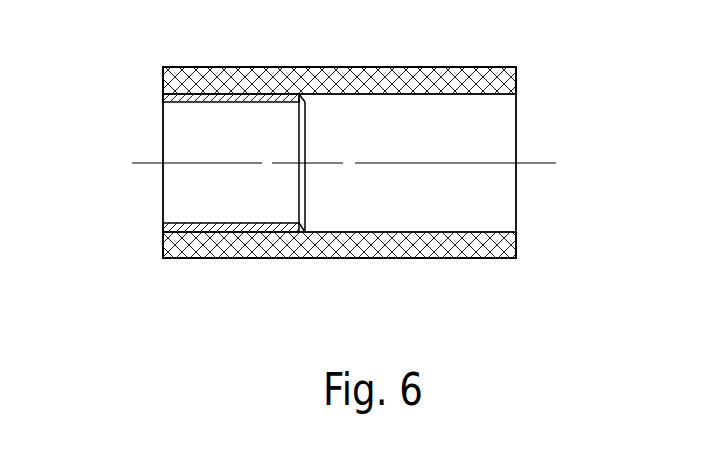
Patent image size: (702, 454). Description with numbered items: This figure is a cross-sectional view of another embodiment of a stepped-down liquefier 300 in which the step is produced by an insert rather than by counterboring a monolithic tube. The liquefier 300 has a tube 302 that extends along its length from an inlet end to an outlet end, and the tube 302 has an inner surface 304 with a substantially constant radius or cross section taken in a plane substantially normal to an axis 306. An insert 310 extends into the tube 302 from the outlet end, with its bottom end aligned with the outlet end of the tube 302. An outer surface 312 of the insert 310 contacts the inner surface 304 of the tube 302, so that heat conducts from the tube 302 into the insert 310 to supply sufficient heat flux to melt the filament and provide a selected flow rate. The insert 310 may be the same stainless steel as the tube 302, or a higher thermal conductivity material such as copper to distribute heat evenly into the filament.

The liquefier 300 is at (252, 291).
The tube 302 is at (490, 243).
The inner surface 304 is at (467, 95).
The axis 306 is at (152, 163).
The insert 310 is at (251, 98).
The outer surface 312 is at (196, 223).